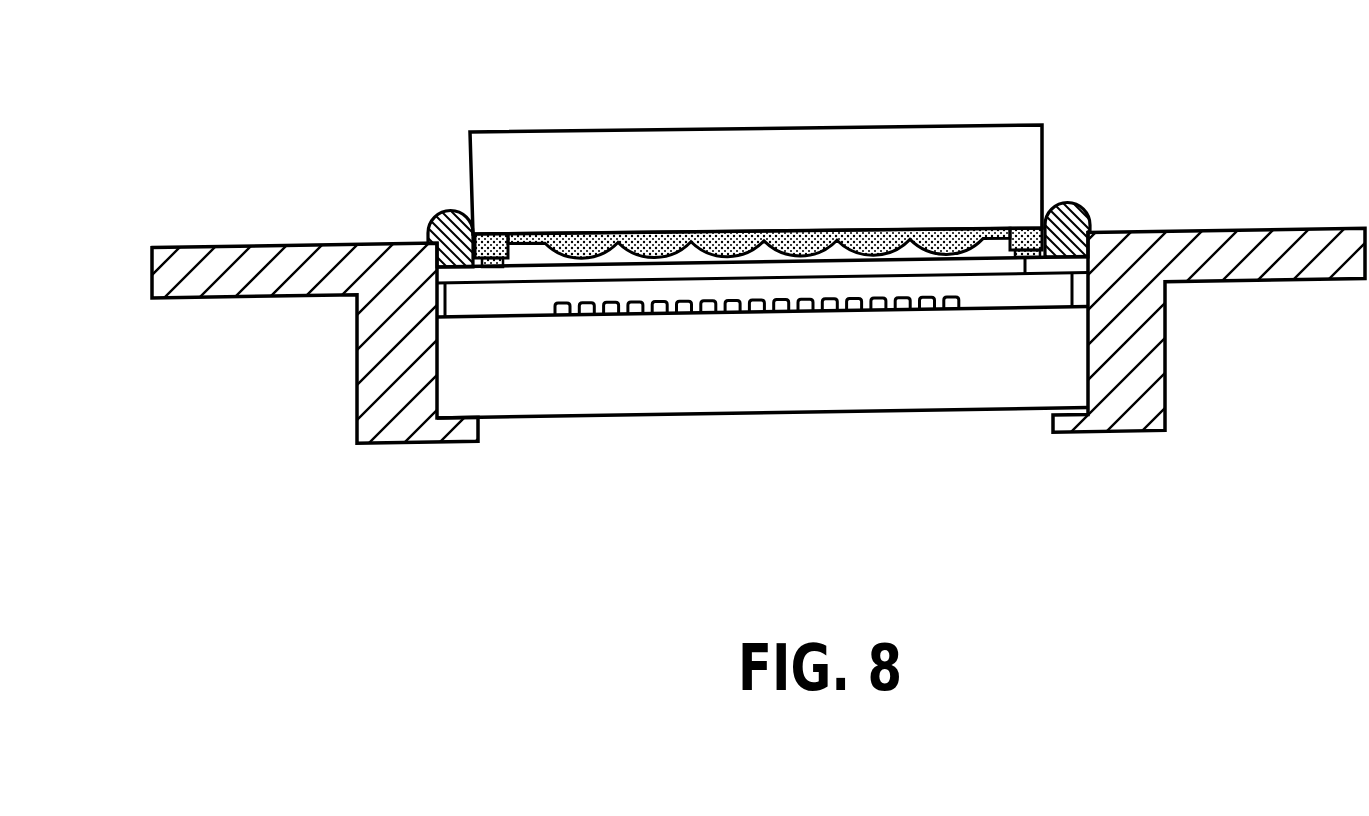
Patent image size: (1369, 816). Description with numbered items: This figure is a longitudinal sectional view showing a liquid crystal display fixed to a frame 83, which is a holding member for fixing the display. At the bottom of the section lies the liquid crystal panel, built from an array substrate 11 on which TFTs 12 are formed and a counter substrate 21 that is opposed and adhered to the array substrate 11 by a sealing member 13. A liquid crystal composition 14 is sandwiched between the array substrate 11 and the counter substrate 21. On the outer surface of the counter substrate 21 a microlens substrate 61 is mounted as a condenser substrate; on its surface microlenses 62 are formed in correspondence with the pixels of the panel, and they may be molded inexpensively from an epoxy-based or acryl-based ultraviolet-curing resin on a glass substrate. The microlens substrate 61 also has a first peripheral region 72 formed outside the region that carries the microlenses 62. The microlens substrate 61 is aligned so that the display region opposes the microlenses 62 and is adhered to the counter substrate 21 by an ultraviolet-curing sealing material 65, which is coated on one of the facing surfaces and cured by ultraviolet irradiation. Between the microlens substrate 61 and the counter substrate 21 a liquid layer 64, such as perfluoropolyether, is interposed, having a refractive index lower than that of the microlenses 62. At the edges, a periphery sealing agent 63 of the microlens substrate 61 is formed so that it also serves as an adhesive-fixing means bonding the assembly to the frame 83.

The array substrate 11 is at (806, 400).
The TFTs 12 is at (706, 314).
The sealing member 13 is at (447, 316).
The liquid crystal composition 14 is at (985, 298).
The counter substrate 21 is at (534, 278).
The microlens substrate 61 is at (950, 140).
The microlenses 62 is at (873, 228).
The periphery sealing agent 63 is at (1073, 210).
The liquid layer 64 is at (1025, 232).
The sealing material 65 is at (1025, 262).
The first peripheral region 72 is at (1045, 202).
The frame 83 is at (1235, 243).